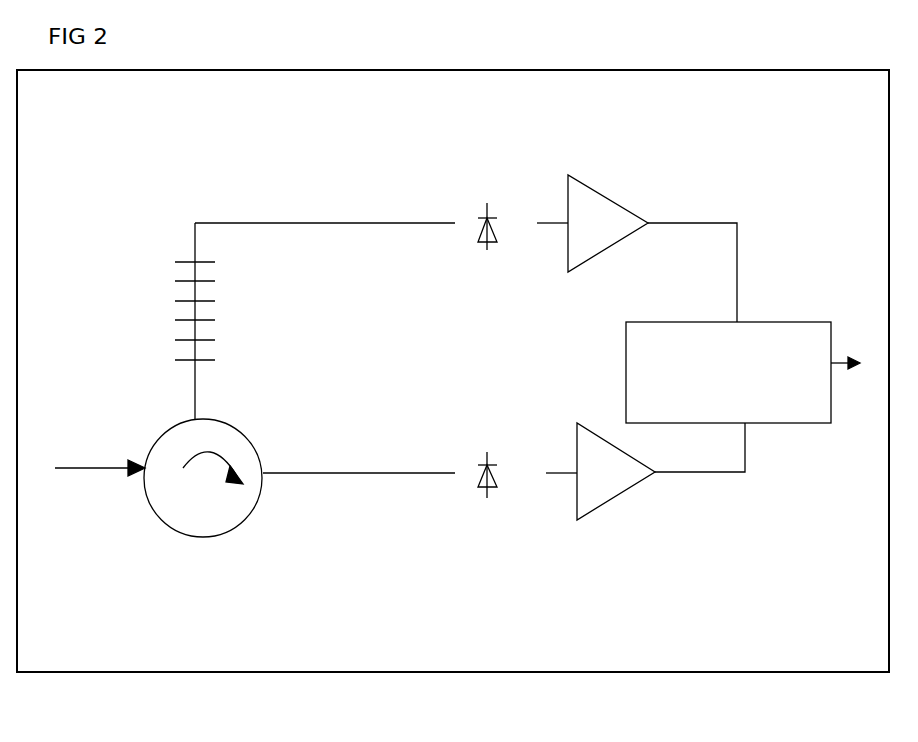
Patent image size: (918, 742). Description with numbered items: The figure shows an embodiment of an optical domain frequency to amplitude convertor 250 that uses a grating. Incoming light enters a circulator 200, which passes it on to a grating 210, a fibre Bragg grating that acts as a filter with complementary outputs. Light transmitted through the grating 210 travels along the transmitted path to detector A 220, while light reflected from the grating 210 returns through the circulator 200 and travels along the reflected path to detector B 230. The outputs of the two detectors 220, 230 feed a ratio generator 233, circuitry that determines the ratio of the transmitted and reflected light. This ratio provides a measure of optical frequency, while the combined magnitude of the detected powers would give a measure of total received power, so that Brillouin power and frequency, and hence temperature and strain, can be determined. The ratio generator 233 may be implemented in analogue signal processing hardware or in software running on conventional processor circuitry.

The frequency to amplitude convertor 250 is at (453, 371).
The grating 210 is at (262, 321).
The detector A 220 is at (605, 238).
The detector B 230 is at (613, 499).
The ratio generator 233 is at (728, 372).
The circulator 200 is at (191, 496).